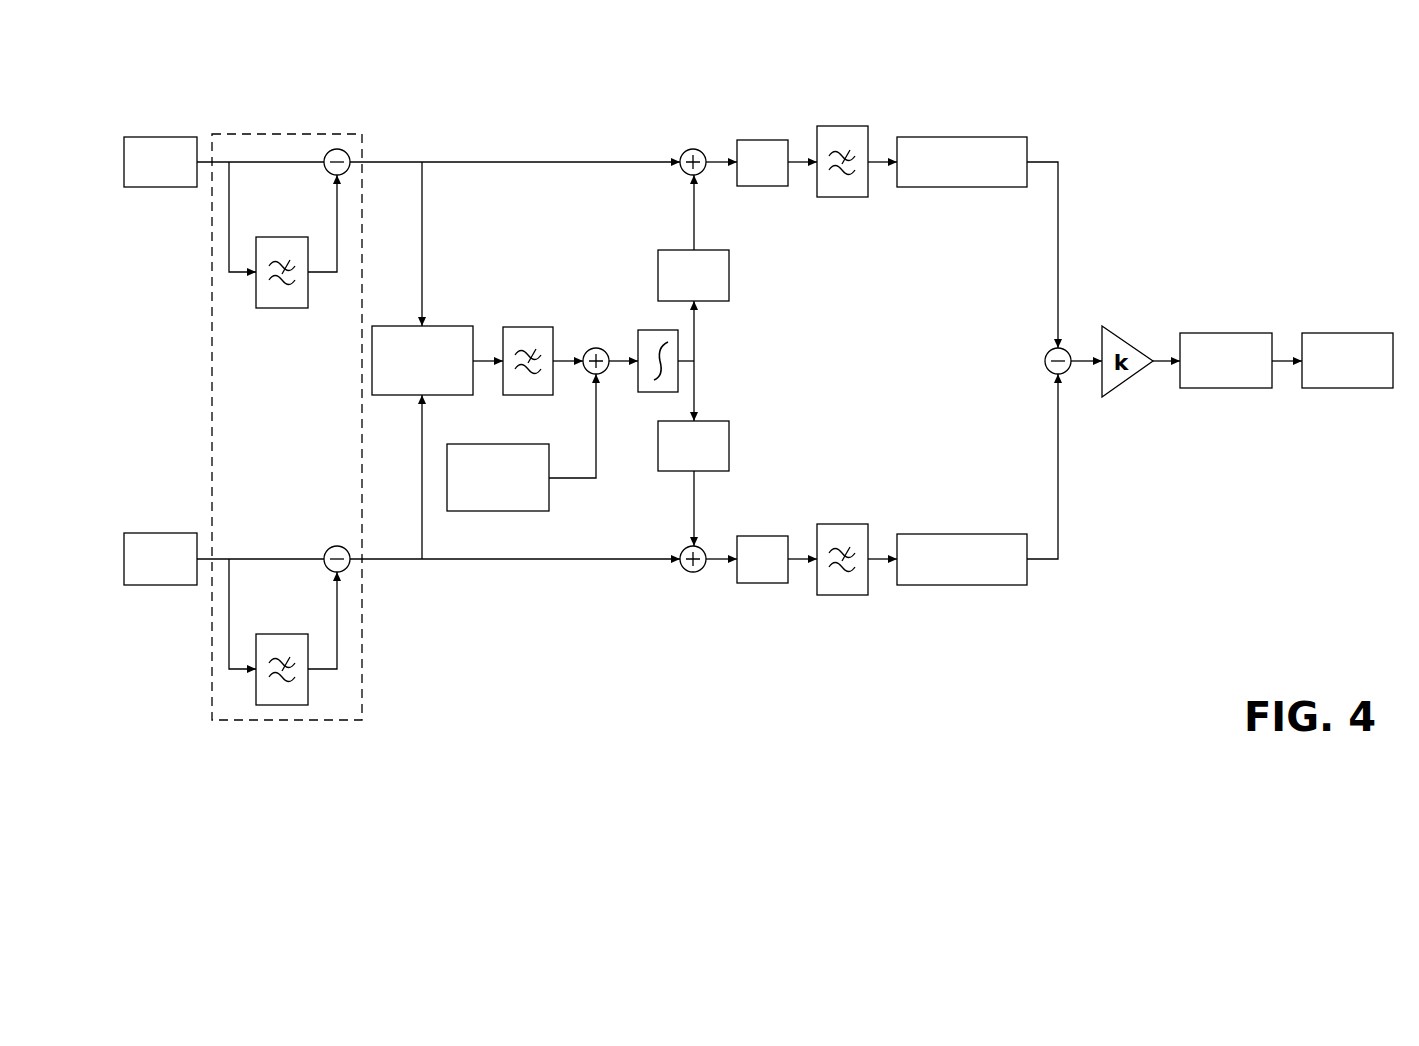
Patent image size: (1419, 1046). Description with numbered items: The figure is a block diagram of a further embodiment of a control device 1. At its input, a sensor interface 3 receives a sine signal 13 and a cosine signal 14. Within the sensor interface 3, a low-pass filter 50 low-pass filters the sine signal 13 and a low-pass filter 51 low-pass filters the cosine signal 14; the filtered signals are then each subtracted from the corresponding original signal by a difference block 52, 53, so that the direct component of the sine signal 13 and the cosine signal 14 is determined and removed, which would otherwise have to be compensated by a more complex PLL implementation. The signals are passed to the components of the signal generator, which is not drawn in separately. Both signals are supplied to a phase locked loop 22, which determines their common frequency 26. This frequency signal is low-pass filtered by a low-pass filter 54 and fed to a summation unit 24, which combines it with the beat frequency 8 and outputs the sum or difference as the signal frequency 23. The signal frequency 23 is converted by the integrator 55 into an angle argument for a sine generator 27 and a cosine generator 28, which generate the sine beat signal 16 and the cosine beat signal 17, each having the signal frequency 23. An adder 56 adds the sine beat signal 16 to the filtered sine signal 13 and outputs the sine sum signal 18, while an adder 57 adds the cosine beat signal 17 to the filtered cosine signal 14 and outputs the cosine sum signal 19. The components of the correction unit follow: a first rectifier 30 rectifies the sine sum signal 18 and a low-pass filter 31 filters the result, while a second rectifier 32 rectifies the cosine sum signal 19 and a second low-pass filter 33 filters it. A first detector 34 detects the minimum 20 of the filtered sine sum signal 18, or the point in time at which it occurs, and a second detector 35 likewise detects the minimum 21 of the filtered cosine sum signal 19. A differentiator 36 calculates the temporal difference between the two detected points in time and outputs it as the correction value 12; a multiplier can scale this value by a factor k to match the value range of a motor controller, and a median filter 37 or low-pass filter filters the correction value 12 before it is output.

The control device 1 is at (517, 667).
The sensor interface 3 is at (287, 134).
The beat frequency 8 is at (549, 498).
The correction value 12 is at (1348, 333).
The sine signal 13 is at (160, 137).
The cosine signal 14 is at (160, 533).
The sine beat signal 16 is at (694, 222).
The cosine beat signal 17 is at (694, 502).
The sine sum signal 18 is at (713, 160).
The cosine sum signal 19 is at (713, 562).
The minimum of the filtered sine sum signal 20 is at (1058, 277).
The minimum of the filtered cosine sum signal 21 is at (1058, 448).
The phase locked loop 22 is at (452, 326).
The signal frequency 23 is at (614, 366).
The summation unit 24 is at (596, 348).
The frequency 26 is at (484, 366).
The sine generator 27 is at (729, 278).
The cosine generator 28 is at (729, 448).
The first rectifier 30 is at (775, 140).
The low-pass filter 31 is at (845, 197).
The second rectifier 32 is at (775, 583).
The second low-pass filter 33 is at (845, 524).
The first detector 34 is at (955, 137).
The second detector 35 is at (955, 585).
The differentiator 36 is at (1045, 361).
The median filter 37 is at (1222, 333).
The low-pass filter 50 is at (282, 308).
The low-pass filter 51 is at (282, 705).
The difference block 52 is at (337, 149).
The difference block 53 is at (337, 546).
The low-pass filter 54 is at (530, 327).
The integrator 55 is at (656, 330).
The adder 56 is at (693, 149).
The adder 57 is at (693, 572).